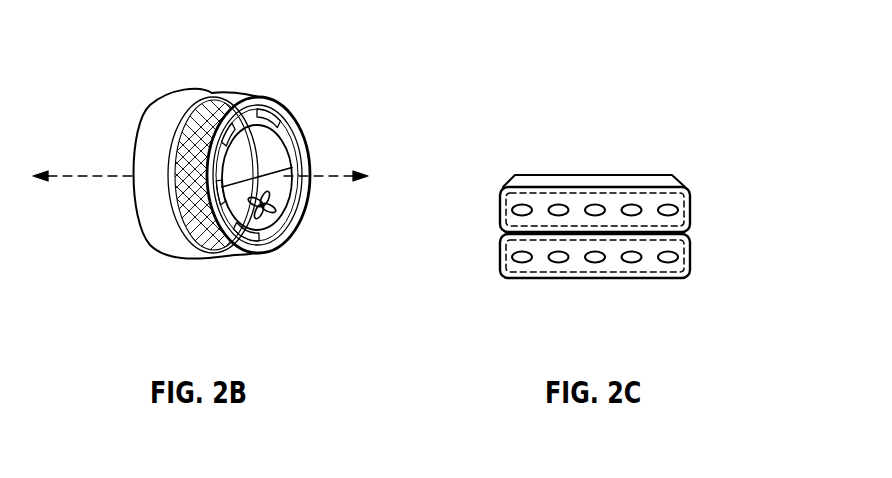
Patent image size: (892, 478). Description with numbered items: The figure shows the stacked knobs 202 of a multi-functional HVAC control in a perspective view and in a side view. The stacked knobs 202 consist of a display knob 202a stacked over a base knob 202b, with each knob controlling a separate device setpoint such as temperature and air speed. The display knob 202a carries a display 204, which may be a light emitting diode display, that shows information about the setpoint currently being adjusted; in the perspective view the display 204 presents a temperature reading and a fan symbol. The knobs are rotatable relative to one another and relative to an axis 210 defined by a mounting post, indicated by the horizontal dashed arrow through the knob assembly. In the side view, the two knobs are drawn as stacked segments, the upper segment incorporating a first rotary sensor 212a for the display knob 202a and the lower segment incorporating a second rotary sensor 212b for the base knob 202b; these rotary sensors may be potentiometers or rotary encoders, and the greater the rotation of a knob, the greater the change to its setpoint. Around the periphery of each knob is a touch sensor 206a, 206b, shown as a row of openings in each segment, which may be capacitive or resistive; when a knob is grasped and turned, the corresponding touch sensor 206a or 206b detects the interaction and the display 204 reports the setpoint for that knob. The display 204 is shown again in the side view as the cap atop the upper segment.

In FIG. 2B, the stacked knobs 202 is at (248, 215).
In FIG. 2C, the stacked knobs 202 is at (596, 221).
In FIG. 2B, the display knob 202a is at (255, 95).
In FIG. 2B, the base knob 202b is at (212, 92).
In FIG. 2B, the display 204 is at (291, 117).
In FIG. 2C, the display 204 is at (663, 182).
In FIG. 2C, the touch sensor 206a is at (559, 204).
In FIG. 2C, the touch sensor 206b is at (559, 262).
In FIG. 2B, the axis 210 is at (73, 178).
In FIG. 2C, the first rotary sensor 212a is at (550, 179).
In FIG. 2C, the second rotary sensor 212b is at (550, 289).